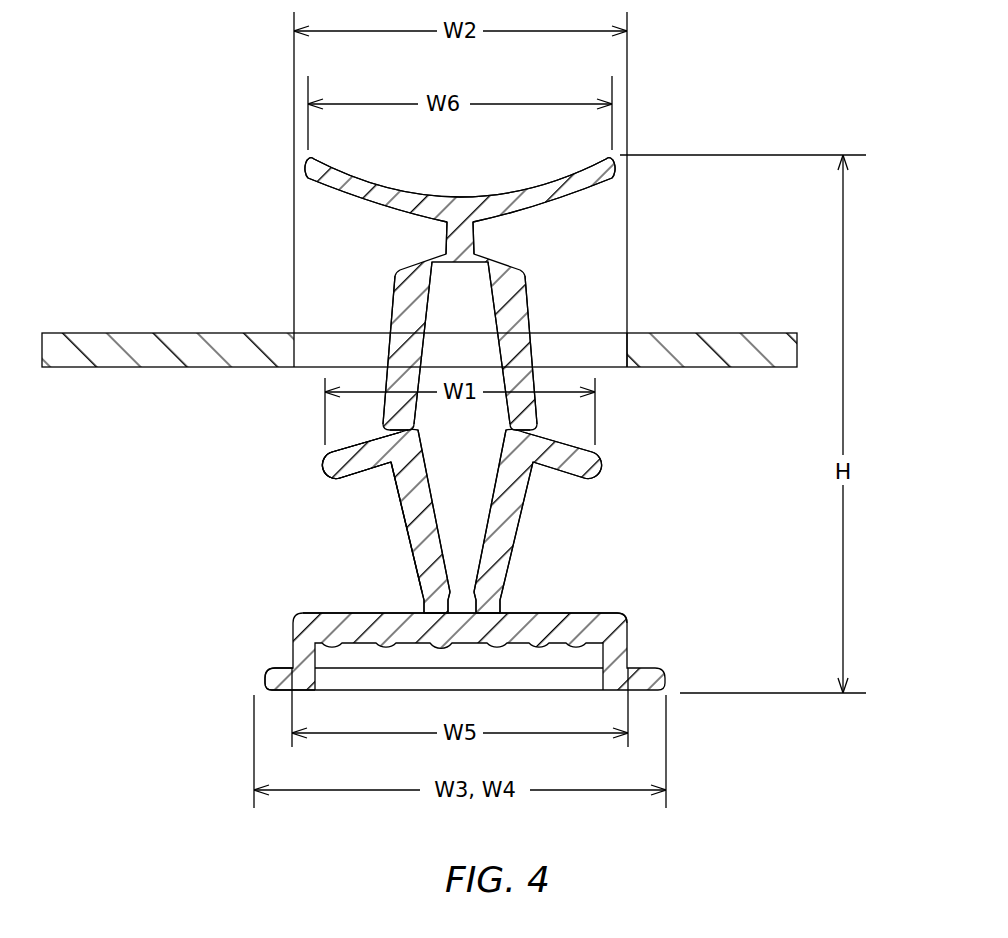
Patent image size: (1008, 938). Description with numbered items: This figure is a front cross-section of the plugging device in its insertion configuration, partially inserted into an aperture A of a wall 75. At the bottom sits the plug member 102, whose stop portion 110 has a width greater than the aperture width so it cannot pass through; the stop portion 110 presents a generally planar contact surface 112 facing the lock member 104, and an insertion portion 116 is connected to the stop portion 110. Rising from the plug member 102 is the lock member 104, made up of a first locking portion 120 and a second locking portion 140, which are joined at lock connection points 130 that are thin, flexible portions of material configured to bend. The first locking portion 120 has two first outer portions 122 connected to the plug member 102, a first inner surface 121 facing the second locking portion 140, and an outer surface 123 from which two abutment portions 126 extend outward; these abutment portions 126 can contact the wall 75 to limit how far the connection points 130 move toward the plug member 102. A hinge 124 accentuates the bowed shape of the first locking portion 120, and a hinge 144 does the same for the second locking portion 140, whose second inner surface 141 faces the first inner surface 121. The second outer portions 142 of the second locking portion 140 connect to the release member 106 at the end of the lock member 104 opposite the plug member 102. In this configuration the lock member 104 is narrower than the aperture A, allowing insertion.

The wall 75 is at (708, 356).
The aperture A is at (603, 349).
The plug member 102 is at (440, 625).
The lock member 104 is at (268, 463).
The release member 106 is at (540, 185).
The stop portion 110 is at (468, 639).
The contact surface 112 is at (275, 668).
The insertion portion 116 is at (630, 626).
The first locking portion 120 is at (501, 519).
The first inner surface 121 is at (500, 497).
The first outer portions 122 is at (414, 535).
The outer surface 123 is at (398, 506).
The hinge 124 is at (426, 598).
The abutment portions 126 is at (578, 460).
The lock connection points 130 is at (415, 430).
The second locking portion 140 is at (461, 293).
The second inner surface 141 is at (506, 321).
The second outer portions 142 is at (405, 323).
The hinge 144 is at (428, 257).